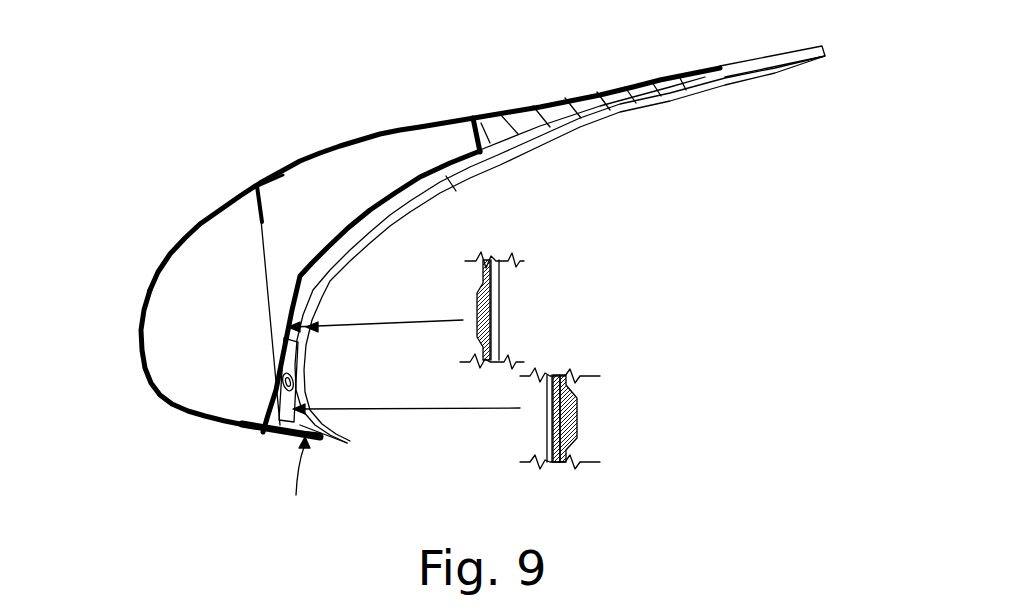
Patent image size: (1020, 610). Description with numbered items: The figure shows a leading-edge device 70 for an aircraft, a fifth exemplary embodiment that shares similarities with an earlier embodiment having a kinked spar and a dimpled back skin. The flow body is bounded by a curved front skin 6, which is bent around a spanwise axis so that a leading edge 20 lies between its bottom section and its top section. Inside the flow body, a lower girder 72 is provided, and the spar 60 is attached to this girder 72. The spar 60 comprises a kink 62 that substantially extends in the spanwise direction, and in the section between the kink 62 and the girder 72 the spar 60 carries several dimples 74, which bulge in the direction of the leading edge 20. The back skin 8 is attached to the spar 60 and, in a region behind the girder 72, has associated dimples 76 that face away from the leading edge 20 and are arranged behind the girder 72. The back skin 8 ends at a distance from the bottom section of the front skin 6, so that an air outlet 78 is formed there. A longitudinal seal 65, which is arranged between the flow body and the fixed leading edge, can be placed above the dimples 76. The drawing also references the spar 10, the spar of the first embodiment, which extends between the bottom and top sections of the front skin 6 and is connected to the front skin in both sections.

The leading-edge device 70 is at (307, 112).
The leading edge 20 is at (138, 280).
The front skin 6 is at (156, 394).
The spar 60 is at (273, 257).
The kink 62 is at (315, 316).
The back skin 8 is at (452, 190).
The air outlet 78 is at (270, 440).
The dimples 74 is at (278, 373).
The longitudinal seal 65 is at (294, 374).
The lower girder 72 is at (262, 431).
The dimples 76 is at (310, 436).
The spar 10 is at (302, 484).